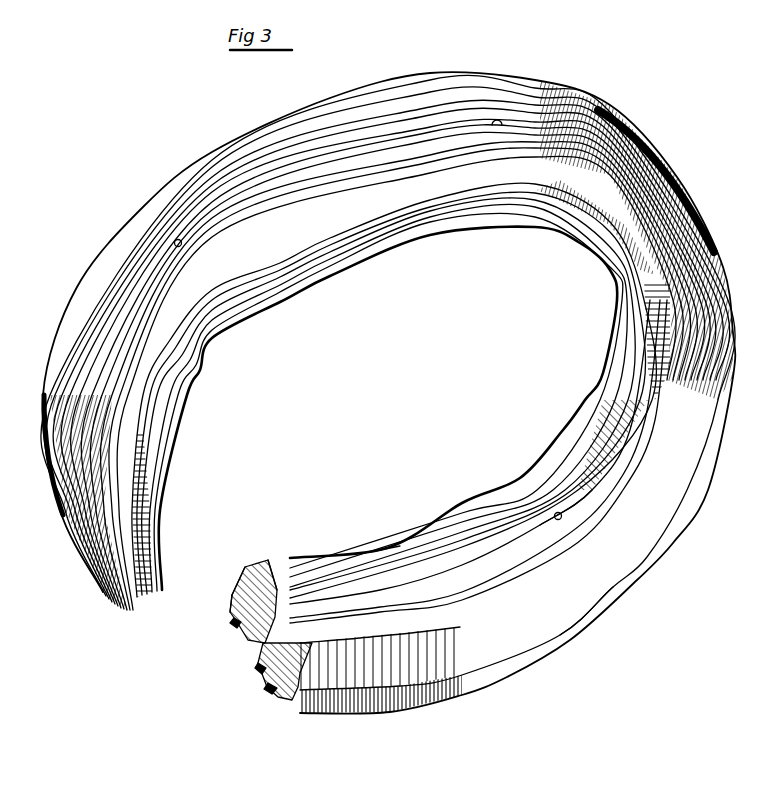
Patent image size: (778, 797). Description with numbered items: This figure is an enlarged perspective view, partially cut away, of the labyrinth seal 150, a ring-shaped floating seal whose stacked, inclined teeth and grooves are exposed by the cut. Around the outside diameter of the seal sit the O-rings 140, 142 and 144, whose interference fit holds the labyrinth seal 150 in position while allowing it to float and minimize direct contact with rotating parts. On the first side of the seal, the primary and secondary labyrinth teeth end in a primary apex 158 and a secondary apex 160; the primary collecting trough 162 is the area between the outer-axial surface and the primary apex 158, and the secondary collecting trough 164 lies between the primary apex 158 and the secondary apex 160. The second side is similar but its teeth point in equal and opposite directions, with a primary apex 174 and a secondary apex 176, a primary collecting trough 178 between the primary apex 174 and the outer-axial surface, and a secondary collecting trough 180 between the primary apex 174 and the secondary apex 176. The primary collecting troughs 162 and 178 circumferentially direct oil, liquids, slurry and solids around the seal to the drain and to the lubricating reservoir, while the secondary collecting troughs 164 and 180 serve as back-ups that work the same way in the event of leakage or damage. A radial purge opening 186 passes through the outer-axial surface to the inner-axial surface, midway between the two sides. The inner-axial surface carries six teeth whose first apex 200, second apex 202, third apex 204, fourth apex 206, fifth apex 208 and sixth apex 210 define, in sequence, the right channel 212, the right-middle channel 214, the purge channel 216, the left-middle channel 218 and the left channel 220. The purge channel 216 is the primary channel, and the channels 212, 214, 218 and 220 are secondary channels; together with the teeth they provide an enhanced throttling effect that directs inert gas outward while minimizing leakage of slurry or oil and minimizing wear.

The O-ring 140 is at (233, 633).
The O-ring 142 is at (262, 687).
The O-ring 144 is at (270, 710).
The labyrinth seal 150 is at (212, 152).
The primary apex 158 is at (233, 592).
The secondary apex 160 is at (233, 562).
The primary collecting trough 162 is at (227, 600).
The secondary collecting trough 164 is at (240, 573).
The primary apex 174 is at (334, 720).
The secondary apex 176 is at (390, 715).
The primary collecting trough 178 is at (107, 590).
The secondary collecting trough 180 is at (123, 563).
The purge opening 186 is at (178, 240).
The first apex 200 is at (283, 558).
The second apex 202 is at (315, 573).
The third apex 204 is at (343, 573).
The fourth apex 206 is at (540, 543).
The fifth apex 208 is at (530, 562).
The sixth apex 210 is at (527, 582).
The right channel 212 is at (387, 545).
The right-middle channel 214 is at (423, 557).
The purge channel 216 is at (463, 573).
The left-middle channel 218 is at (490, 583).
The left channel 220 is at (470, 608).